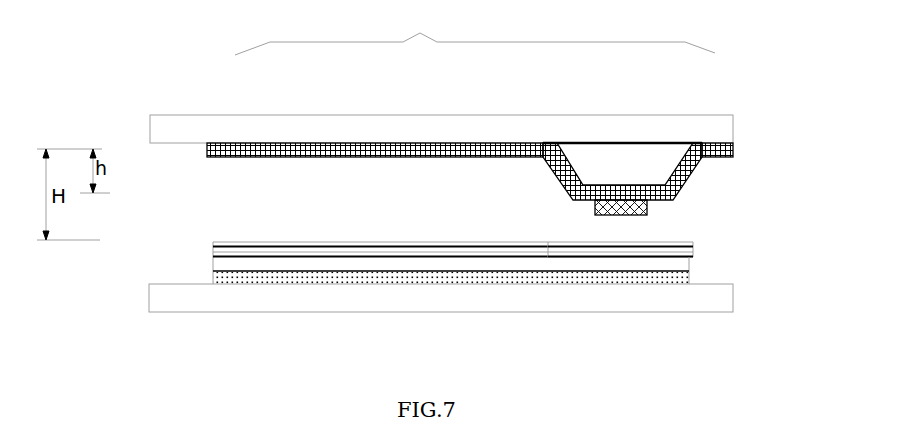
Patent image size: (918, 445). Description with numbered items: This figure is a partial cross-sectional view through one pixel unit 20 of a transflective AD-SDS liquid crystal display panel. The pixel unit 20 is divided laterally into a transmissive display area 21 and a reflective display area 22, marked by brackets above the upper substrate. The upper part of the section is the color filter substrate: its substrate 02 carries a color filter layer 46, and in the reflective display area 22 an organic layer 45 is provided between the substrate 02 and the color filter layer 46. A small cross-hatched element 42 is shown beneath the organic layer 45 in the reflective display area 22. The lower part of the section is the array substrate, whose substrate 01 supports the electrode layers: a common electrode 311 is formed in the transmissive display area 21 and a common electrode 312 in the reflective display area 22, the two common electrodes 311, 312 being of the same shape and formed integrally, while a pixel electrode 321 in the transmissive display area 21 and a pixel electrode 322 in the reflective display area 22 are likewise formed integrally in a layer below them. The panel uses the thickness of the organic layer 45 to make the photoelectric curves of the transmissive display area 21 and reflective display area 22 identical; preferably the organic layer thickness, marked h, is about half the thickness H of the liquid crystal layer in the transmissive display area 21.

The pixel unit 20 is at (475, 34).
The transmissive display area 21 is at (538, 90).
The reflective display area 22 is at (707, 88).
The substrate of the color filter substrate 02 is at (710, 127).
The color filter layer 46 is at (693, 175).
The organic layer 45 is at (585, 155).
The spacer / bump 42 is at (647, 212).
The common electrode 311 is at (238, 246).
The common electrode 312 is at (663, 249).
The pixel electrode 321 is at (305, 282).
The pixel electrode 322 is at (658, 282).
The substrate 01 is at (715, 297).